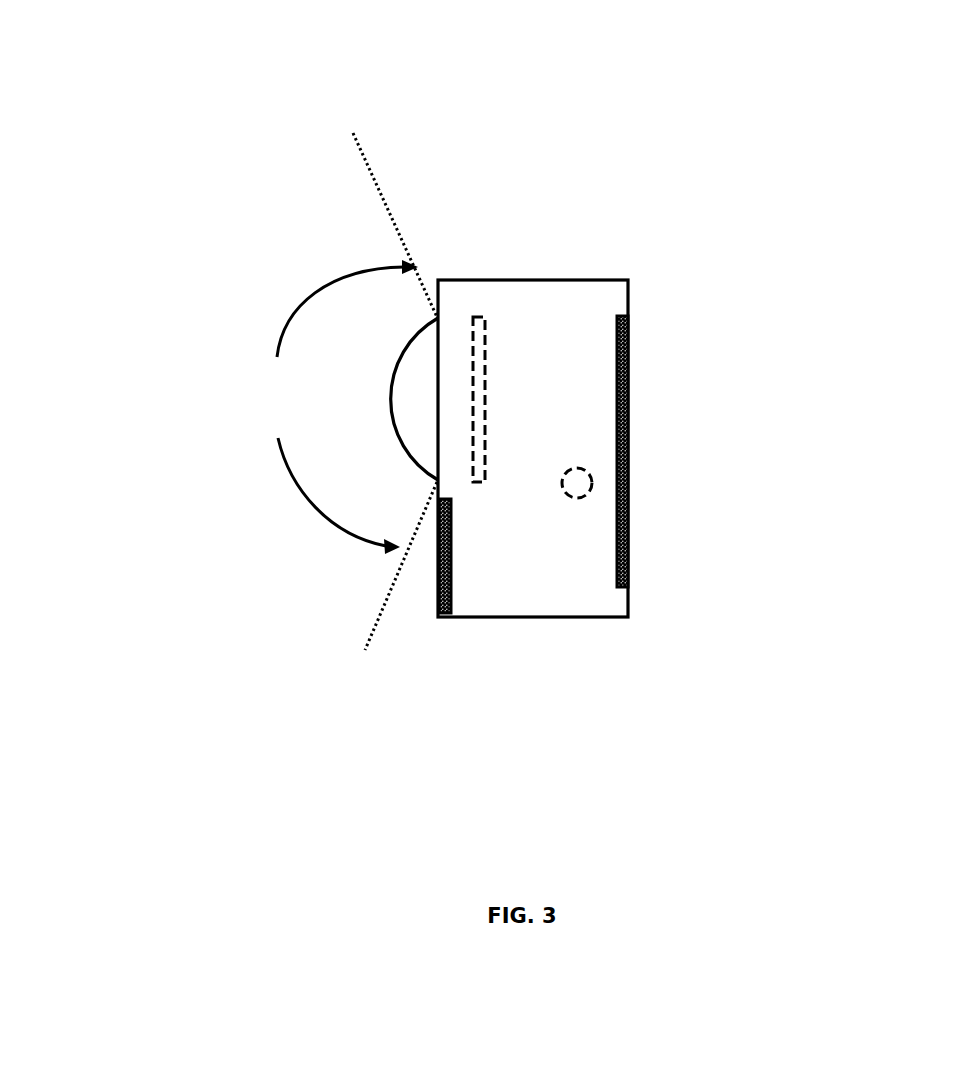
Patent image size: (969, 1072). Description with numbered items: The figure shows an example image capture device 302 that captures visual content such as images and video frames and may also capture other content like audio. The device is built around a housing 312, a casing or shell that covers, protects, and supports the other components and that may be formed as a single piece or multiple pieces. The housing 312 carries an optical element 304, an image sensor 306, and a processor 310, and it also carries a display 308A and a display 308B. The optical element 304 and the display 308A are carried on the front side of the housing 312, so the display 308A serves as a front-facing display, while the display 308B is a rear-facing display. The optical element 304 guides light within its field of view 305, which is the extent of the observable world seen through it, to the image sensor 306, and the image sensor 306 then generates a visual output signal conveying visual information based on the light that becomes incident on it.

The image capture device 302 is at (580, 391).
The optical element 304 is at (437, 481).
The field of view 305 is at (311, 391).
The image sensor 306 is at (481, 316).
The display 308A is at (443, 617).
The display 308B is at (632, 405).
The processor 310 is at (577, 498).
The housing 312 is at (502, 617).